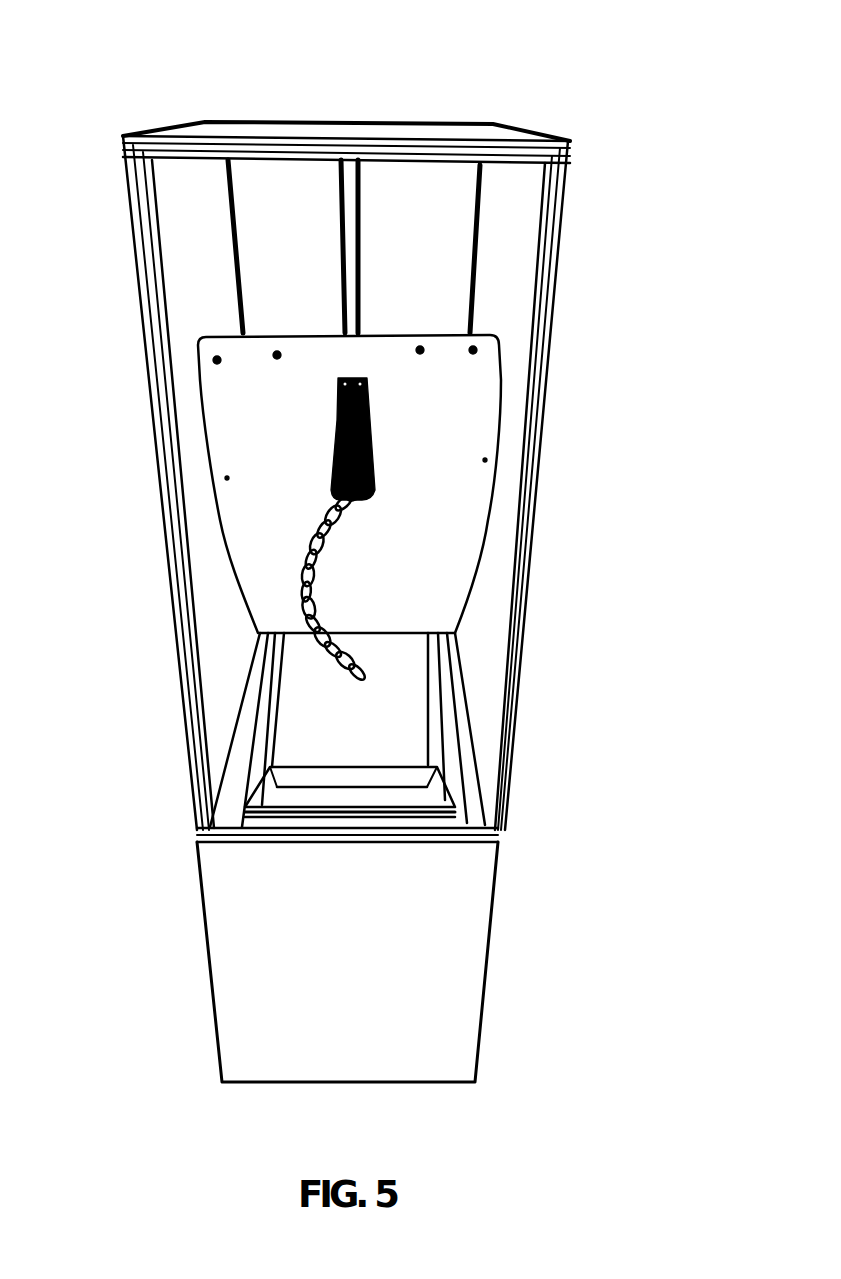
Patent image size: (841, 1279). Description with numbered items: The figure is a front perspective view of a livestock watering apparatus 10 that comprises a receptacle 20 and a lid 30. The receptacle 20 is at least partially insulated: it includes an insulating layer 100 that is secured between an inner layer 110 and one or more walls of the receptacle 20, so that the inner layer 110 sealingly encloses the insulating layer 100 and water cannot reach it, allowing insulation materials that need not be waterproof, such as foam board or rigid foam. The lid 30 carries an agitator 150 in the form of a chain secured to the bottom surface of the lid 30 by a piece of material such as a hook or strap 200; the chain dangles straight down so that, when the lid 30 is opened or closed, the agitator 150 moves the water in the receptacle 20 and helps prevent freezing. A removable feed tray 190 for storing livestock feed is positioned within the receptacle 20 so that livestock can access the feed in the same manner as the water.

The livestock watering apparatus 10 is at (261, 86).
The receptacle 20 is at (548, 338).
The lid 30 is at (197, 380).
The insulating layer 100 is at (228, 782).
The inner layer 110 is at (453, 767).
The agitator 150 is at (320, 523).
The removable feed tray 190 is at (310, 763).
The strap 200 is at (367, 428).